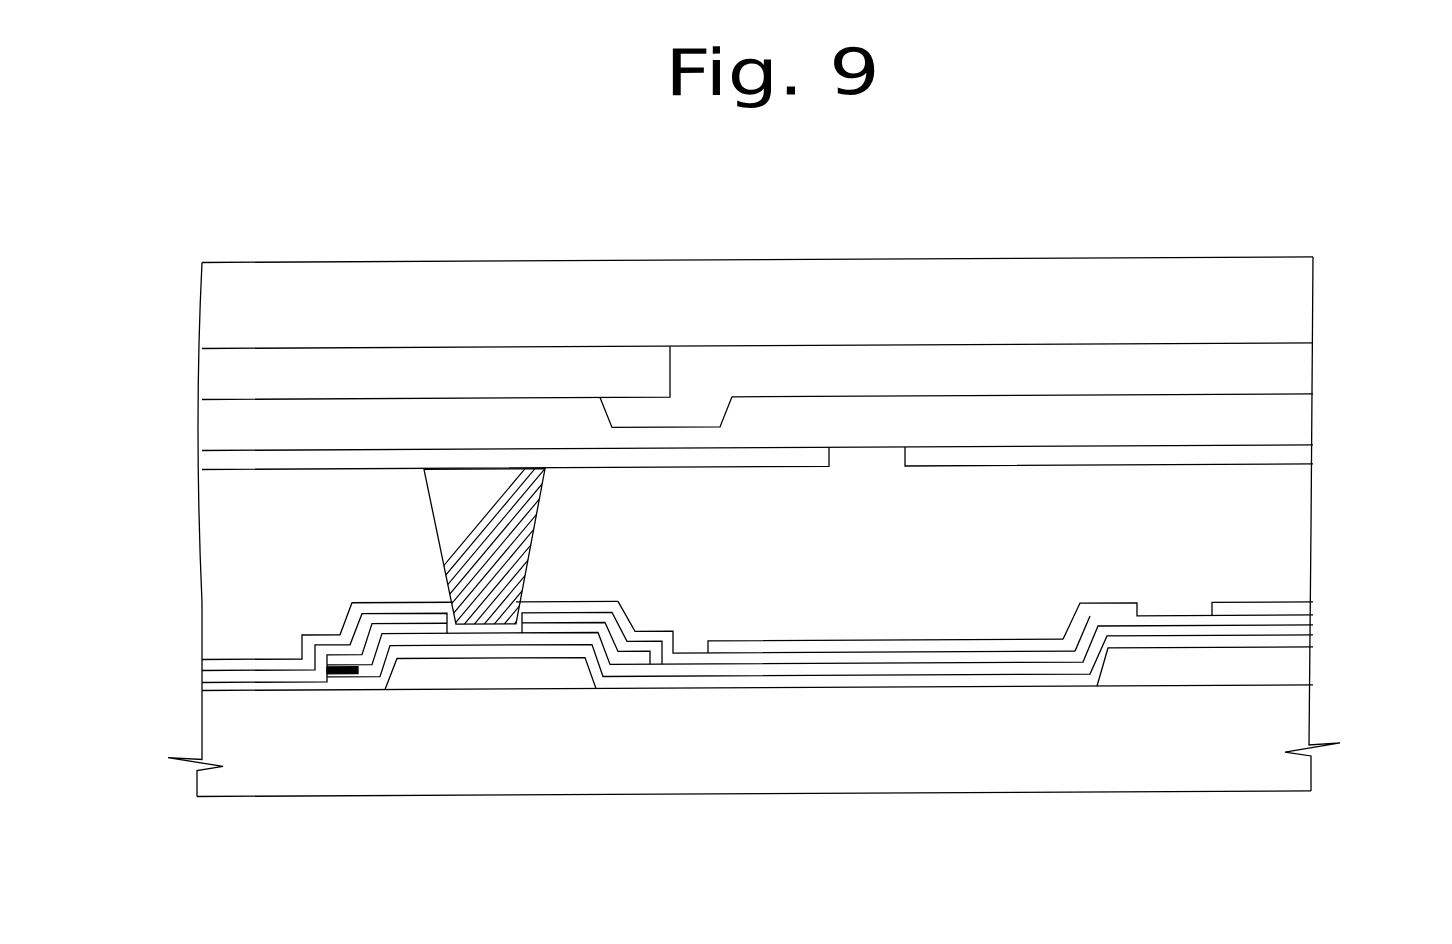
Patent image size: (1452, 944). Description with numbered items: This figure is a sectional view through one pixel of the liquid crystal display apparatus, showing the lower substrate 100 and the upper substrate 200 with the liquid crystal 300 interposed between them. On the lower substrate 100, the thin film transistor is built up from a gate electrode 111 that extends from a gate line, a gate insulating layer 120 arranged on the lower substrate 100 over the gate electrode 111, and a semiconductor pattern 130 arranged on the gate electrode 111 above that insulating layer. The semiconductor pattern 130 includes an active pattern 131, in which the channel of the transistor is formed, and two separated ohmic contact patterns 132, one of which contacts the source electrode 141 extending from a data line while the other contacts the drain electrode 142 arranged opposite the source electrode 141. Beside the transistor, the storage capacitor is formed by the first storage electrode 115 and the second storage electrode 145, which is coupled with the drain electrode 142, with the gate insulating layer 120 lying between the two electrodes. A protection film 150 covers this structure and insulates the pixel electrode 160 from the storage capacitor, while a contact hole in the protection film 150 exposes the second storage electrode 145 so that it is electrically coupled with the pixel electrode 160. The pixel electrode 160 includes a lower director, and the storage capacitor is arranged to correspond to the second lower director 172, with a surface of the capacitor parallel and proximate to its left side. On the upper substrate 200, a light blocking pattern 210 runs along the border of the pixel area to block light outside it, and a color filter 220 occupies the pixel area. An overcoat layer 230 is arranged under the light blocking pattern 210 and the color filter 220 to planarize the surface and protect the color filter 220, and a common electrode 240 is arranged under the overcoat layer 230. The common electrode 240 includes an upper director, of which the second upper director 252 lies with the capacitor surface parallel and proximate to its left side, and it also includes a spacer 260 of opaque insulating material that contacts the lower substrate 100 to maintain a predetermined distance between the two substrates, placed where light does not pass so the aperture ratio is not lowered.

The lower substrate 100 is at (1300, 719).
The gate electrode 111 is at (505, 684).
The first storage electrode 115 is at (1300, 671).
The gate insulating layer 120 is at (200, 681).
The semiconductor pattern 130 is at (804, 773).
The active pattern 131 is at (348, 670).
The ohmic contact pattern 132 is at (336, 663).
The source electrode 141 is at (200, 669).
The drain electrode 142 is at (637, 628).
The second storage electrode 145 is at (1313, 635).
The protection film 150 is at (1313, 622).
The pixel electrode 160 is at (1313, 610).
The second lower director 172 is at (1172, 598).
The upper substrate 200 is at (1302, 303).
The light blocking pattern 210 is at (200, 376).
The color filter 220 is at (1296, 370).
The overcoat layer 230 is at (1300, 416).
The common electrode 240 is at (1302, 458).
The second upper director 252 is at (873, 468).
The spacer 260 is at (525, 511).
The liquid crystal 300 is at (1300, 520).